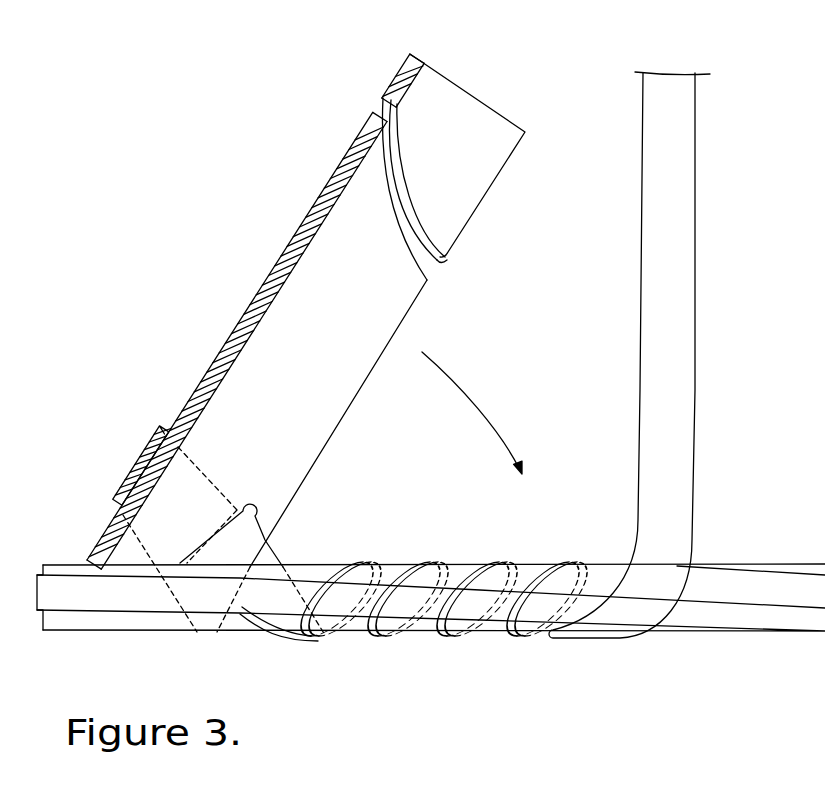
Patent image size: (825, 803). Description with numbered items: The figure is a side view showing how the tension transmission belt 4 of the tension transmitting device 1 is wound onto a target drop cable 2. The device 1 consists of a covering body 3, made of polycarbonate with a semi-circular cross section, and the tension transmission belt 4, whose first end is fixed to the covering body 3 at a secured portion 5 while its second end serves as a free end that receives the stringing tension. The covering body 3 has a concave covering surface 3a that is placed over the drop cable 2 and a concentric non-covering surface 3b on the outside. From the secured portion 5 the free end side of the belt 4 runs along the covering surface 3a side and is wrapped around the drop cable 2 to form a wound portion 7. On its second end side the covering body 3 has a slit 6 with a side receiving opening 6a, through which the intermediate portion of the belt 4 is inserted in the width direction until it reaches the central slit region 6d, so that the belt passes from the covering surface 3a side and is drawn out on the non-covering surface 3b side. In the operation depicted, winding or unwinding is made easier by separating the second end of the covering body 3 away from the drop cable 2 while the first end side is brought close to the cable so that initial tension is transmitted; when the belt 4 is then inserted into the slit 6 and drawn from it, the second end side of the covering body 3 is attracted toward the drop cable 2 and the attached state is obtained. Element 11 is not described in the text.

The tension transmitting device 1 is at (207, 146).
The drop cable 2 is at (781, 562).
The covering body 3 is at (275, 263).
The covering surface 3a is at (258, 325).
The non-covering surface 3b is at (222, 348).
The tension transmission belt 4 is at (700, 373).
The secured portion 5 is at (130, 462).
The slit 6 is at (393, 236).
The side receiving opening 6a is at (433, 267).
The central slit region 6d is at (377, 110).
The wound portion 7 is at (503, 554).
The hook 11 is at (220, 528).